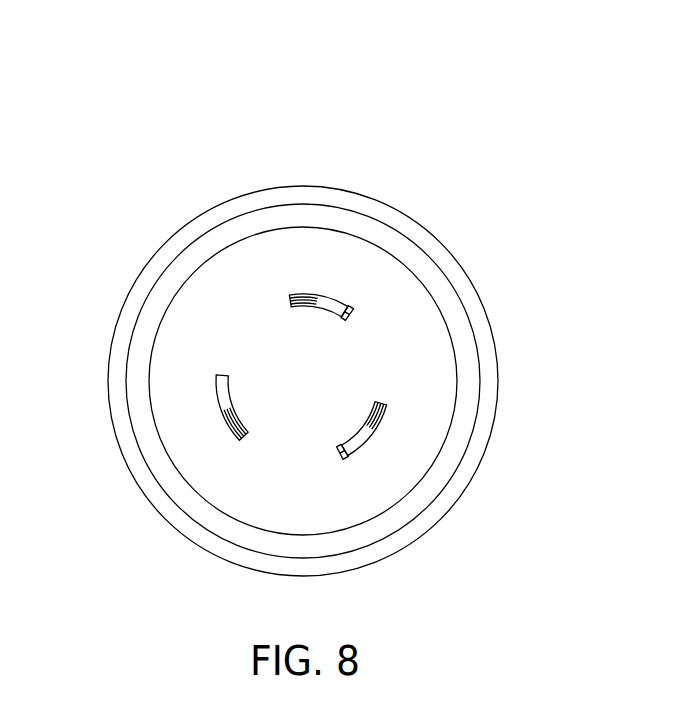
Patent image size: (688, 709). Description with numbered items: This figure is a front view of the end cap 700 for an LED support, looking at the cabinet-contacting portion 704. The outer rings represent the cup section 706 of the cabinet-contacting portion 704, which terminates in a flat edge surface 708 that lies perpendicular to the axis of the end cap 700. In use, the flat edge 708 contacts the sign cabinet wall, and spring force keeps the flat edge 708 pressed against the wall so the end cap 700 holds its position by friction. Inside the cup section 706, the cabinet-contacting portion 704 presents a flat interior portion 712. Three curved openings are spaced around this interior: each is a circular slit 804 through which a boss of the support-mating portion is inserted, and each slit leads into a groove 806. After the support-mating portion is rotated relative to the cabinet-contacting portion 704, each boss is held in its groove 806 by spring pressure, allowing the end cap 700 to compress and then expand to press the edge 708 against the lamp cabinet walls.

The end cap 700 is at (510, 107).
The cabinet-contacting portion 704 is at (455, 173).
The cup section 706 is at (137, 280).
The flat edge surface 708 is at (117, 370).
The flat interior portion 712 is at (359, 368).
The circular slits 804 is at (349, 304).
The groove 806 is at (302, 296).